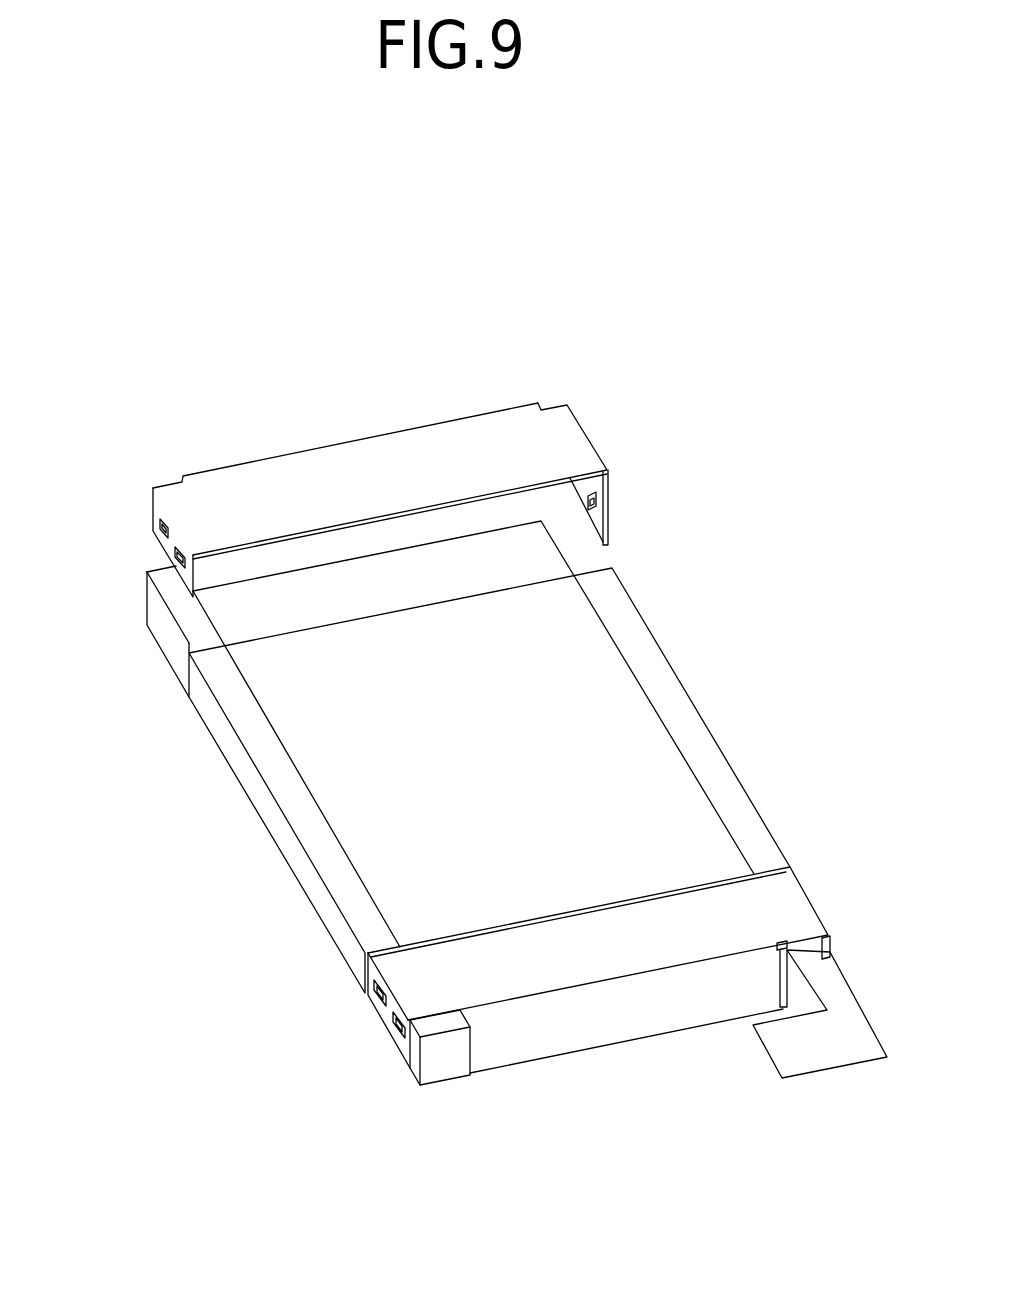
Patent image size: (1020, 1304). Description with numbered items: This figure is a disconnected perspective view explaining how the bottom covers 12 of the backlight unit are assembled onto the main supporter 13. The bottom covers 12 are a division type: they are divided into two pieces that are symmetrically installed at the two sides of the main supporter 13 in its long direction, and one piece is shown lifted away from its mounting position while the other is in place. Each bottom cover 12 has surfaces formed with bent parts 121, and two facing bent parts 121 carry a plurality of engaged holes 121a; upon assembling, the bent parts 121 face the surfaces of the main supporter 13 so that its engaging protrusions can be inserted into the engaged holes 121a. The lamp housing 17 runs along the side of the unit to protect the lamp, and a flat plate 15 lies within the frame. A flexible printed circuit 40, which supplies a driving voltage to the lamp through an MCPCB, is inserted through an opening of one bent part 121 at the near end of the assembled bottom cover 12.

The bottom cover 12 is at (258, 480).
The bent part 121 is at (180, 548).
The engaged hole 121a is at (160, 529).
The main supporter 13 is at (160, 636).
The panel 15 is at (618, 675).
The lamp housing 17 is at (277, 796).
The flexible printed circuit 40 is at (795, 1058).